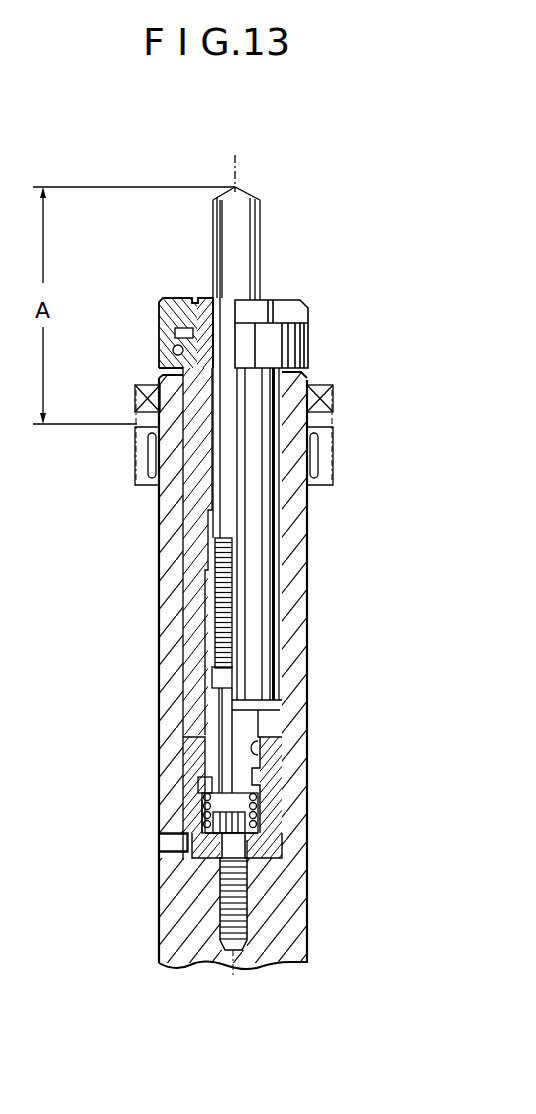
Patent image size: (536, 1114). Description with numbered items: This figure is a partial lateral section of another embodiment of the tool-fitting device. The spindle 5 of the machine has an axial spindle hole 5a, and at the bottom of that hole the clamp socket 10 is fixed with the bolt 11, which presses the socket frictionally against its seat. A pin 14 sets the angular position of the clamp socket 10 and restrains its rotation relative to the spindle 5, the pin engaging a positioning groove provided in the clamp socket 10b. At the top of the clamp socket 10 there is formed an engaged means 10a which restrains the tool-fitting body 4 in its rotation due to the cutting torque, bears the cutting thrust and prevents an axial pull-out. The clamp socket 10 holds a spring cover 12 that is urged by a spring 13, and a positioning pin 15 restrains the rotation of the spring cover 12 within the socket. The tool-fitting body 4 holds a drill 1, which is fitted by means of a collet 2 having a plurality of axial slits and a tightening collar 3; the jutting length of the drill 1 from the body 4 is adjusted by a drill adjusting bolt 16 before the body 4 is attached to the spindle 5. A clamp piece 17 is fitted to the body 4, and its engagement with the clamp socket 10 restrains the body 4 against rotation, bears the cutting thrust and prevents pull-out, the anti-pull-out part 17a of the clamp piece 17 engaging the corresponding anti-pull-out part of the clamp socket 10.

The drill 1 is at (218, 215).
The collet 2 is at (197, 298).
The tightening collar 3 is at (160, 300).
The tool-fitting body 4 is at (193, 505).
The spindle 5 is at (150, 578).
The spindle hole 5a is at (181, 549).
The drill adjusting bolt 16 is at (207, 606).
The clamp piece 17 is at (203, 737).
The anti-pull-out part 17a is at (198, 766).
The positioning pin 15 is at (203, 798).
The clamp socket 10 is at (244, 771).
The engaged means 10a is at (232, 696).
The clamp socket 10b is at (183, 826).
The pin 14 is at (173, 843).
The spring cover 12 is at (265, 814).
The spring 13 is at (272, 835).
The bolt 11 is at (247, 902).